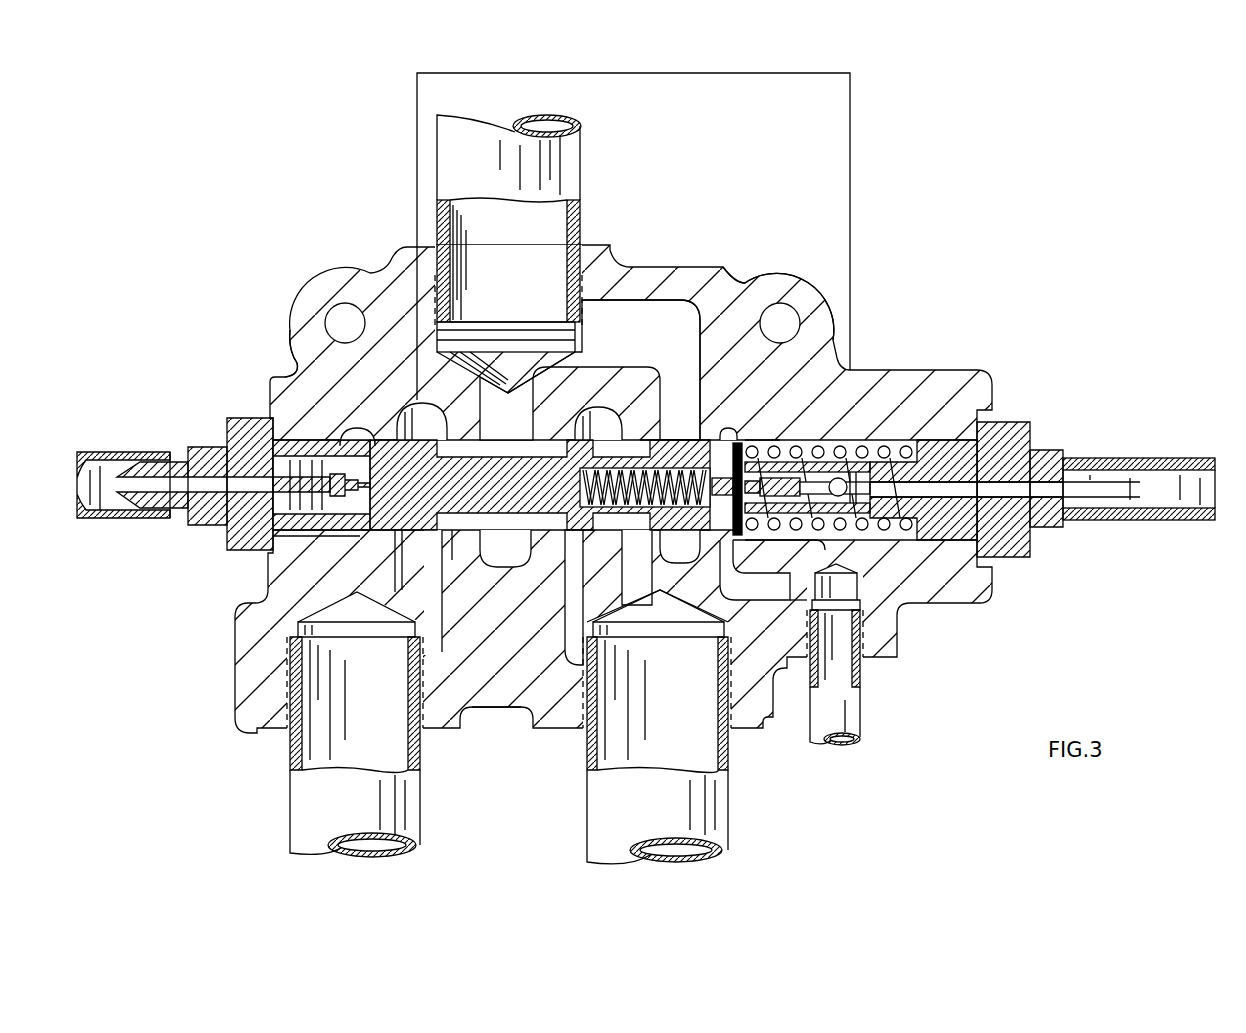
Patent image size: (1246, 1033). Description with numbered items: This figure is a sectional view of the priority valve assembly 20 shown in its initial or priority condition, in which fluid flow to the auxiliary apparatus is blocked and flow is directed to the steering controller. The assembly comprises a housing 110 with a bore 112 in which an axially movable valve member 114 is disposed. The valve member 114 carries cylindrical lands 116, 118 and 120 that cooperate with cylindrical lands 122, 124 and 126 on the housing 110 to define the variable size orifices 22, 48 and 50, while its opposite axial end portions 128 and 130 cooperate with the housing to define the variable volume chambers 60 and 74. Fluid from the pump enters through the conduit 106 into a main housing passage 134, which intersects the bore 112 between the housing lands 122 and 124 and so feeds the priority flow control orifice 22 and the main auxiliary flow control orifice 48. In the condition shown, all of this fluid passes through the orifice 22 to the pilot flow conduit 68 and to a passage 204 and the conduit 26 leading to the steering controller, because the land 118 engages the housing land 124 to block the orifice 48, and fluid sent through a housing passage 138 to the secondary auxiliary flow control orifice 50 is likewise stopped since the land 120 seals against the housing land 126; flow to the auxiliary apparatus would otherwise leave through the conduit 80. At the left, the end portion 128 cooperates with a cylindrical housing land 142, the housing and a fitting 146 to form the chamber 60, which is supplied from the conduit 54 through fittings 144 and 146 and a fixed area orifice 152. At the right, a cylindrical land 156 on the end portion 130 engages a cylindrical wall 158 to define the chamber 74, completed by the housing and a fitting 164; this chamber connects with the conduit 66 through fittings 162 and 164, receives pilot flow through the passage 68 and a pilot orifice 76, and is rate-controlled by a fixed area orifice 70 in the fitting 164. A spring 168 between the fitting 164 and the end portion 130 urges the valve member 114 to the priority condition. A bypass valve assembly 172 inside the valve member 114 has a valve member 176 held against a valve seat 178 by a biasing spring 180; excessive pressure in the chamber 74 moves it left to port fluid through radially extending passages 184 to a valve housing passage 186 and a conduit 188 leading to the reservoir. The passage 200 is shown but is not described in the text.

The priority valve assembly 20 is at (955, 262).
The priority flow control orifice 22 is at (437, 422).
The conduit 26 is at (305, 797).
The main auxiliary flow control orifice 48 is at (555, 438).
The secondary auxiliary flow control orifice 50 is at (636, 430).
The conduit 54 is at (110, 519).
The variable volume chamber 60 is at (347, 433).
The conduit 66 is at (1185, 521).
The pilot flow conduit 68 is at (730, 76).
The fixed area orifice 70 is at (962, 444).
The variable volume chamber 74 is at (886, 442).
The pilot orifice 76 is at (745, 450).
The conduit 80 is at (722, 818).
The conduit 106 is at (560, 160).
The housing 110 is at (732, 266).
The bore 112 is at (750, 280).
The valve member 114 is at (383, 428).
The cylindrical land 116 is at (360, 548).
The cylindrical land 118 is at (568, 572).
The cylindrical land 120 is at (675, 558).
The cylindrical land 122 is at (475, 560).
The cylindrical land 124 is at (513, 560).
The cylindrical land 126 is at (623, 548).
The end portion 128 is at (300, 542).
The end portion 130 is at (805, 535).
The main housing passage 134 is at (495, 345).
The housing passage 138 is at (660, 300).
The cylindrical housing land 142 is at (540, 485).
The fitting 144 is at (208, 527).
The fitting 146 is at (230, 420).
The fixed area orifice 152 is at (297, 436).
The cylindrical land 156 is at (773, 463).
The cylindrical wall 158 is at (790, 465).
The fitting 162 is at (1058, 455).
The fitting 164 is at (1032, 422).
The spring 168 is at (858, 445).
The bypass valve assembly 172 is at (770, 436).
The valve member 176 is at (660, 592).
The valve seat 178 is at (765, 560).
The biasing spring 180 is at (583, 487).
The radially extending passages 184 is at (729, 430).
The valve housing passage 186 is at (792, 600).
The conduit 188 is at (856, 720).
The passage 200 is at (560, 622).
The passage 204 is at (488, 708).